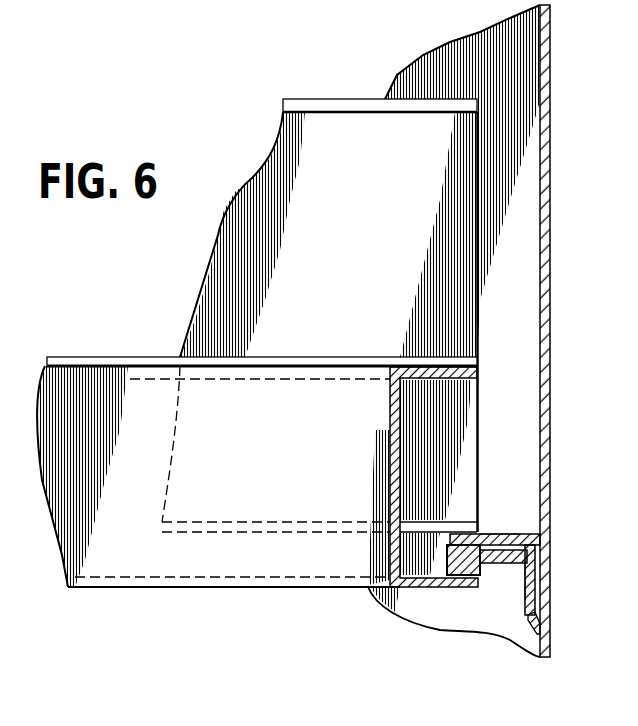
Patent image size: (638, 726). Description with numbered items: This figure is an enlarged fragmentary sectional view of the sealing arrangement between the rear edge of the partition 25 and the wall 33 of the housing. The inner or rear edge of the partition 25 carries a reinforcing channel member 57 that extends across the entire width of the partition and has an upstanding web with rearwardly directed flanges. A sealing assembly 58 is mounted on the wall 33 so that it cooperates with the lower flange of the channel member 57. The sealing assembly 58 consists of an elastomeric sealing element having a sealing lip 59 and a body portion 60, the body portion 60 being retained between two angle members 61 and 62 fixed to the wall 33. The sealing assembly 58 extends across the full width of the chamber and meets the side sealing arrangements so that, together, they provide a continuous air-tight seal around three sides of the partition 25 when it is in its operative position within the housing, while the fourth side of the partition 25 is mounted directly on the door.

The partition 25 is at (128, 357).
The wall 33 is at (550, 172).
The reinforcing channel member 57 is at (388, 403).
The sealing assembly 58 is at (538, 588).
The sealing lip 59 is at (437, 585).
The body portion 60 is at (523, 540).
The angle member 61 is at (492, 534).
The angle member 62 is at (527, 573).